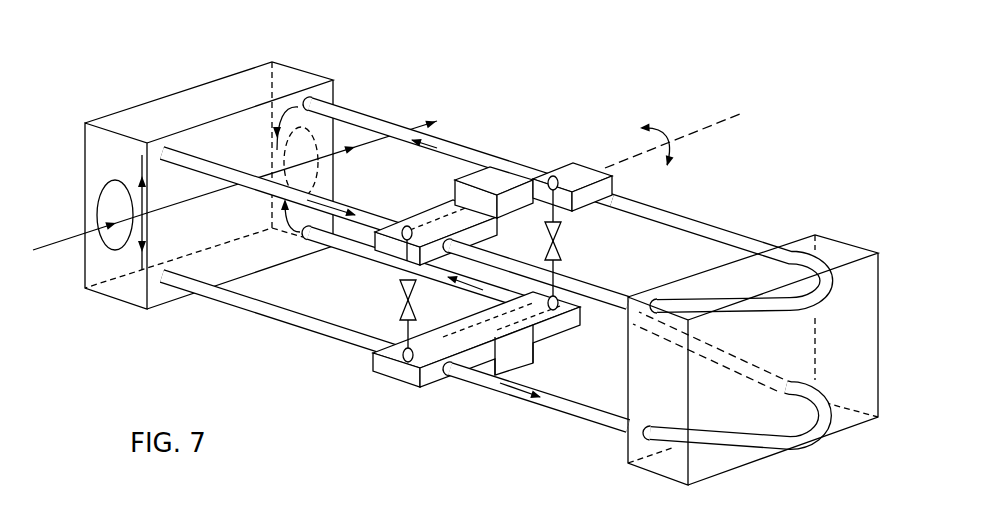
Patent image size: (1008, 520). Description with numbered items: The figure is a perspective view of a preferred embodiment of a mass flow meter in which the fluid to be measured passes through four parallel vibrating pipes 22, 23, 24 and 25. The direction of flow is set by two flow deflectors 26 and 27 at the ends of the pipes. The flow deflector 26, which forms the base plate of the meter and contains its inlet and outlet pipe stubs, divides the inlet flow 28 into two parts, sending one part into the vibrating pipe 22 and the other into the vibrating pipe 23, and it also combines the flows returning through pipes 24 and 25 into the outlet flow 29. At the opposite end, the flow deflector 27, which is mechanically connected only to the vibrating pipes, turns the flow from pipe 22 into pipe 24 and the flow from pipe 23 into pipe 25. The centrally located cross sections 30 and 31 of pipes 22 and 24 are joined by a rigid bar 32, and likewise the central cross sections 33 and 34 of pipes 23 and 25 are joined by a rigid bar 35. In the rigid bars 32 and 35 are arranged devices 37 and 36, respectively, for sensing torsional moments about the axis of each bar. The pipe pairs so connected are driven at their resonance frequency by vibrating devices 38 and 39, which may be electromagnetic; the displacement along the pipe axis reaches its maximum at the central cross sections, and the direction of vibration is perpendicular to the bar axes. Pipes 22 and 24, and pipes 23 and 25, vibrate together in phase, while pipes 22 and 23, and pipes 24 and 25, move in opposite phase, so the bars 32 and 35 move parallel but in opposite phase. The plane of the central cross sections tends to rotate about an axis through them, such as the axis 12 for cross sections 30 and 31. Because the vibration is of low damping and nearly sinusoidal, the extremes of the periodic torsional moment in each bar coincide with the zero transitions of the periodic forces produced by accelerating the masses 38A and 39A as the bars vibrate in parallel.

The axis 12 is at (708, 125).
The vibrating pipe 22 is at (222, 179).
The vibrating pipe 23 is at (238, 309).
The vibrating pipe 24 is at (355, 112).
The vibrating pipe 25 is at (345, 255).
The flow deflector 26 is at (143, 108).
The flow deflector 27 is at (753, 349).
The inlet flow 28 is at (78, 237).
The outlet flow 29 is at (407, 112).
The central cross section 30 is at (404, 236).
The central cross section 31 is at (553, 176).
The rigid bar 32 is at (600, 170).
The central cross section 33 is at (400, 380).
The central cross section 34 is at (560, 300).
The rigid bar 35 is at (418, 388).
The sensing device 36 is at (538, 347).
The sensing device 37 is at (612, 193).
The vibrating device 38 is at (401, 312).
The mass 38A is at (453, 192).
The vibrating device 39 is at (560, 252).
The mass 39A is at (540, 378).